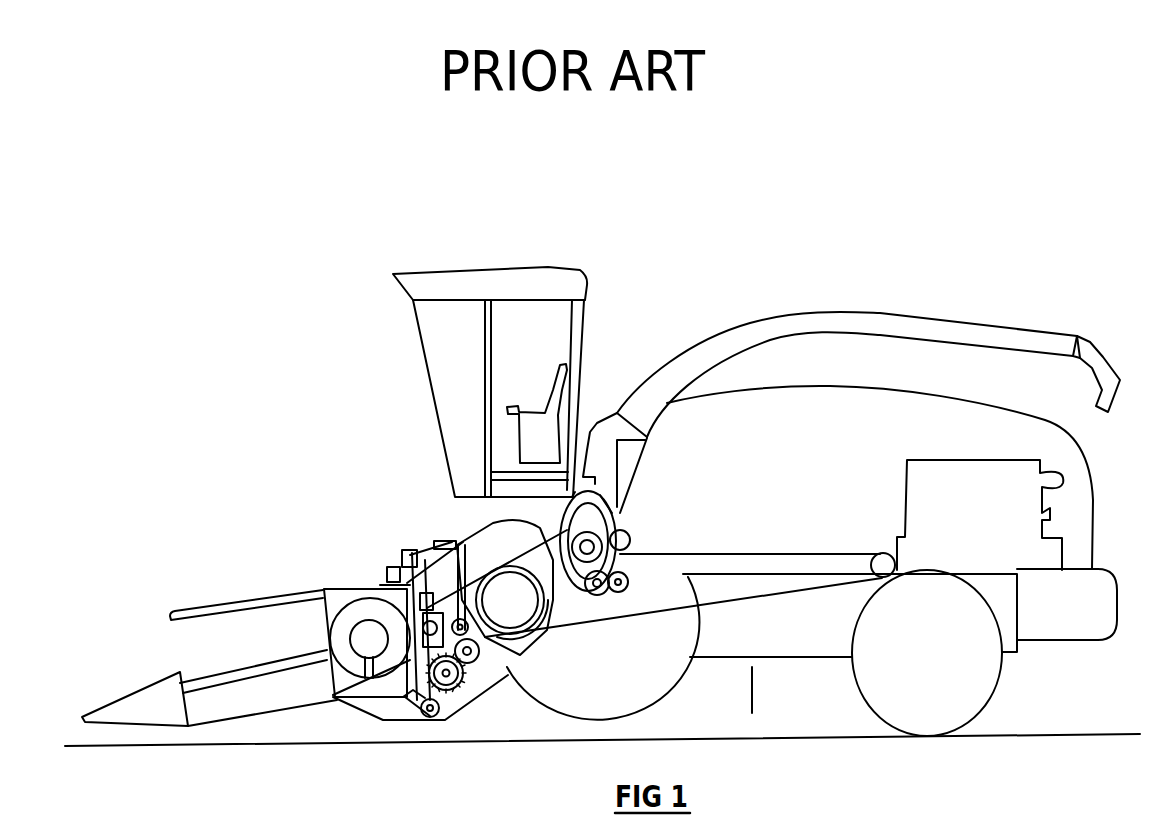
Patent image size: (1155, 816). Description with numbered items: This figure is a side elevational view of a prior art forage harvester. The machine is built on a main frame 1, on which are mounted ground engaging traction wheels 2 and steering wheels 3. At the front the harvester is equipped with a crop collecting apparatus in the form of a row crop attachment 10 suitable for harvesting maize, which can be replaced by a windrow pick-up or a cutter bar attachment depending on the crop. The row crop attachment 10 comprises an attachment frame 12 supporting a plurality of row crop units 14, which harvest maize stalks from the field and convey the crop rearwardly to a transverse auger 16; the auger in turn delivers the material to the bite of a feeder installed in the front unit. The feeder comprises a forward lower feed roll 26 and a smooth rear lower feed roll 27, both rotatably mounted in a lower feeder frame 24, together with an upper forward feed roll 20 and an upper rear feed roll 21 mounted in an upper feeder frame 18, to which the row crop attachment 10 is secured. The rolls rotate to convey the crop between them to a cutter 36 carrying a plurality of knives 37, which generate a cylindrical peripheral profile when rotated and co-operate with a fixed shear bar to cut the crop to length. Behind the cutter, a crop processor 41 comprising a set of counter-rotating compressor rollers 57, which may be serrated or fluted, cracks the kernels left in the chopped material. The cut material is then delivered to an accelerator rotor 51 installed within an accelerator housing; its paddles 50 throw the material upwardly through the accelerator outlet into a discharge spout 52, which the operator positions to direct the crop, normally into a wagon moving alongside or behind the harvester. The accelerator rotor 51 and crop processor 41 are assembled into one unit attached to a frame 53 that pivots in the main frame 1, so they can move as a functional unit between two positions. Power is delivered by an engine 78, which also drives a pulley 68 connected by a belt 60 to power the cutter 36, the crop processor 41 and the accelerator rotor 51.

The main frame 1 is at (900, 652).
The ground engaging traction wheels 2 is at (573, 720).
The steering wheels 3 is at (988, 692).
The row crop attachment 10 is at (255, 586).
The attachment frame 12 is at (373, 705).
The row crop units 14 is at (232, 700).
The transverse auger 16 is at (358, 600).
The upper feeder frame 18 is at (428, 543).
The upper forward feed roll 20 is at (413, 552).
The upper rear feed roll 21 is at (460, 545).
The lower feeder frame 24 is at (457, 738).
The forward lower feed roll 26 is at (440, 720).
The smooth rear lower feed roll 27 is at (469, 665).
The cutter 36 is at (485, 558).
The knives 37 is at (503, 552).
The crop processor 41 is at (608, 595).
The paddles 50 is at (562, 483).
The accelerator rotor 51 is at (628, 508).
The discharge spout 52 is at (836, 315).
The frame 53 is at (622, 572).
The compressor rollers 57 is at (578, 612).
The belt 60 is at (762, 553).
The pulley 68 is at (882, 556).
The engine 78 is at (947, 465).